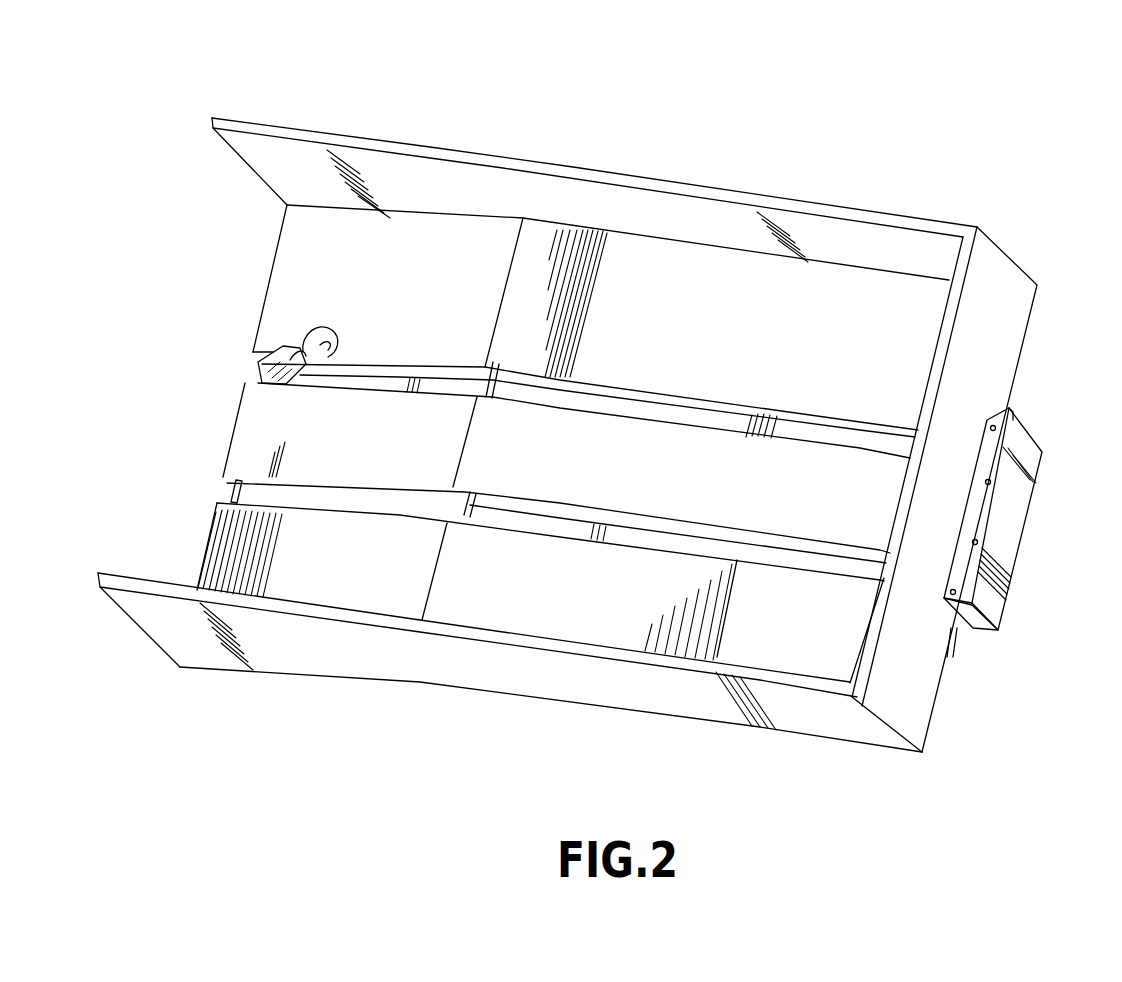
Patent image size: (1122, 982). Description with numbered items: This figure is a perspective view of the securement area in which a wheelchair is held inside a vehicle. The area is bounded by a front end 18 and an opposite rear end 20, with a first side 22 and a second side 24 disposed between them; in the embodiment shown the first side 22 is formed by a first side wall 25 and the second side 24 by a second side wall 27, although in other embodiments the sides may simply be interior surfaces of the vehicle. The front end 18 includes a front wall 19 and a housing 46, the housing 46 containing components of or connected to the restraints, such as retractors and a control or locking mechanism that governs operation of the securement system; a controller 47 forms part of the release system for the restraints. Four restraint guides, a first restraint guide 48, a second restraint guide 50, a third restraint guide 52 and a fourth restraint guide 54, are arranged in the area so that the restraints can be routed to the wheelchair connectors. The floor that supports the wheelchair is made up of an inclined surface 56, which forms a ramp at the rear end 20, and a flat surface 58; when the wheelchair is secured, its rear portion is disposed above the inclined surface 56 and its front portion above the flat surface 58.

The front end 18 is at (1007, 374).
The front wall 19 is at (1012, 330).
The rear end 20 is at (228, 268).
The first side 22 is at (567, 168).
The second side 24 is at (600, 698).
The first side wall 25 is at (453, 152).
The second side wall 27 is at (500, 683).
The housing 46 is at (1013, 502).
The controller 47 is at (1007, 550).
The first restraint guide 48 is at (258, 370).
The second restraint guide 50 is at (232, 492).
The third restraint guide 52 is at (860, 440).
The fourth restraint guide 54 is at (792, 558).
The inclined surface 56 is at (278, 580).
The flat surface 58 is at (755, 632).